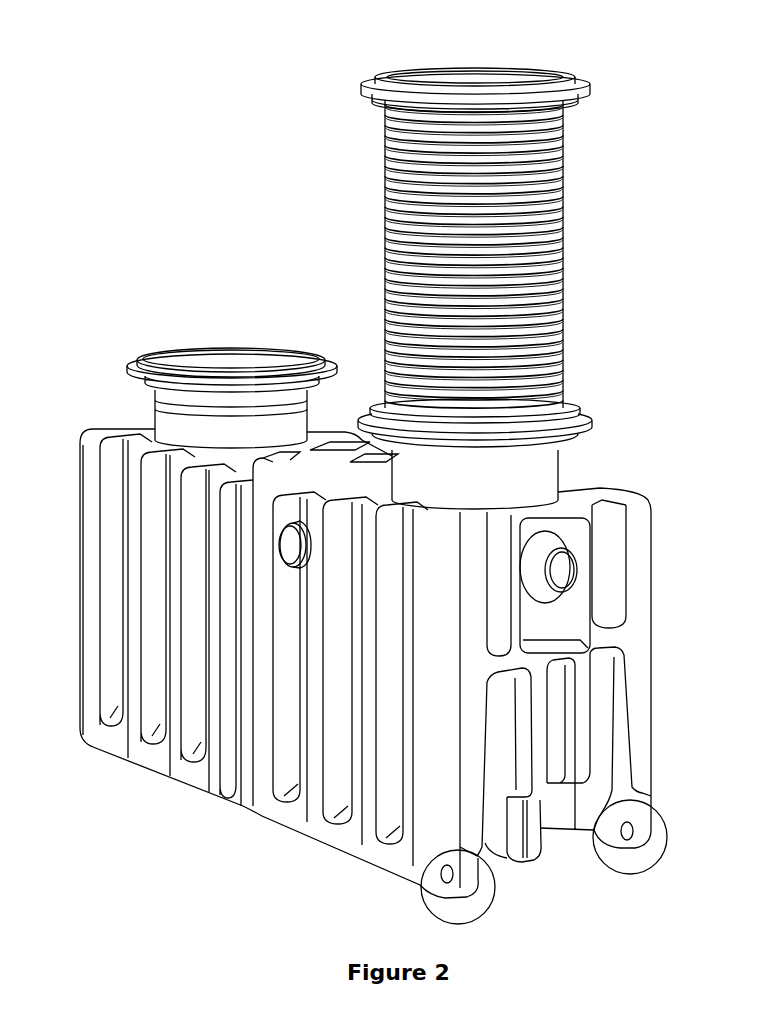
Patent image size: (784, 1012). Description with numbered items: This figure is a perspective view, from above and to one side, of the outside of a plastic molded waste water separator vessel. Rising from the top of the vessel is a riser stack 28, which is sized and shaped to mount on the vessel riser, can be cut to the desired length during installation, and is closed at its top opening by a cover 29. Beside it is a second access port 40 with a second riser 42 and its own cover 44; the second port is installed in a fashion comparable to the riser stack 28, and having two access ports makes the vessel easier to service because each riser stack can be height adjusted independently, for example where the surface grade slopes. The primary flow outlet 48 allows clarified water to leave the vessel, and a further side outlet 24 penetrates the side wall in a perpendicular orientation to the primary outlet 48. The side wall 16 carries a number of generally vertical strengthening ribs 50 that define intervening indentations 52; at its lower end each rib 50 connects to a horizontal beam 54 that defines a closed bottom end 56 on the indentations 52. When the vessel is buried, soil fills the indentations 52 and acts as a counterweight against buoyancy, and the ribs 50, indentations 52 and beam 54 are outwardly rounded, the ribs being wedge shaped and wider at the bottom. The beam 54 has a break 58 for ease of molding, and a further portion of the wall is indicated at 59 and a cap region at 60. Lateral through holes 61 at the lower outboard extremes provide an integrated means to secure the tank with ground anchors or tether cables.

The side wall 16 is at (88, 545).
The side outlet 24 is at (287, 540).
The riser stack 28 is at (386, 265).
The cover 29 is at (432, 68).
The second access port 40 is at (195, 357).
The second riser 42 is at (152, 405).
The cover 44 is at (280, 350).
The primary flow outlet 48 is at (562, 568).
The vertical strengthening rib 50 is at (95, 692).
The indentation 52 is at (110, 664).
The horizontal beam 54 is at (147, 752).
The closed bottom end 56 is at (190, 762).
The break 58 is at (257, 814).
The right section 59 is at (630, 642).
The cap top 60 is at (238, 345).
The lateral through hole 61 is at (600, 862).